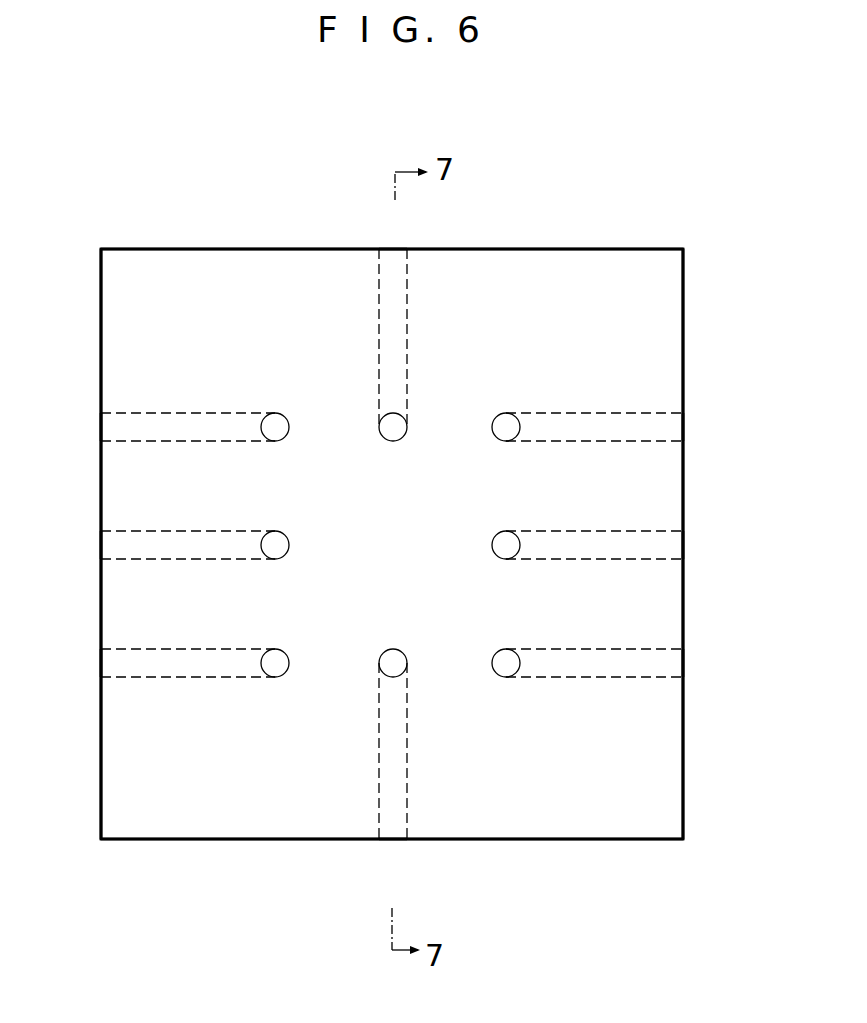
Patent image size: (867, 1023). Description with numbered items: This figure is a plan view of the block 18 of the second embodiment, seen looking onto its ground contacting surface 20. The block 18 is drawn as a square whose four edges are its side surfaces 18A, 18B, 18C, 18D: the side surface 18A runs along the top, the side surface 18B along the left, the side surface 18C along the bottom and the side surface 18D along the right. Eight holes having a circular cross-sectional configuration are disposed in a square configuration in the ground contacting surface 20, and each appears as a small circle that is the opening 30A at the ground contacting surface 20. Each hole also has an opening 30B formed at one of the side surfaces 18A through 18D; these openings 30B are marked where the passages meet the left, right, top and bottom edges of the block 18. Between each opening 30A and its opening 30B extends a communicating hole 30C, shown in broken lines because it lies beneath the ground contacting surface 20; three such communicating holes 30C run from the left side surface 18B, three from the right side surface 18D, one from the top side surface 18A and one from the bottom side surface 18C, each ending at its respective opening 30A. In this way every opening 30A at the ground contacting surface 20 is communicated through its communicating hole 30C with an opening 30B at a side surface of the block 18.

The block 18 is at (588, 246).
The side surface 18A is at (523, 248).
The side surface 18B is at (101, 281).
The side surface 18C is at (548, 840).
The side surface 18D is at (683, 333).
The ground contacting surface 20 is at (240, 270).
The opening 30A is at (283, 430).
The opening 30B is at (101, 428).
The communicating hole 30C is at (215, 436).